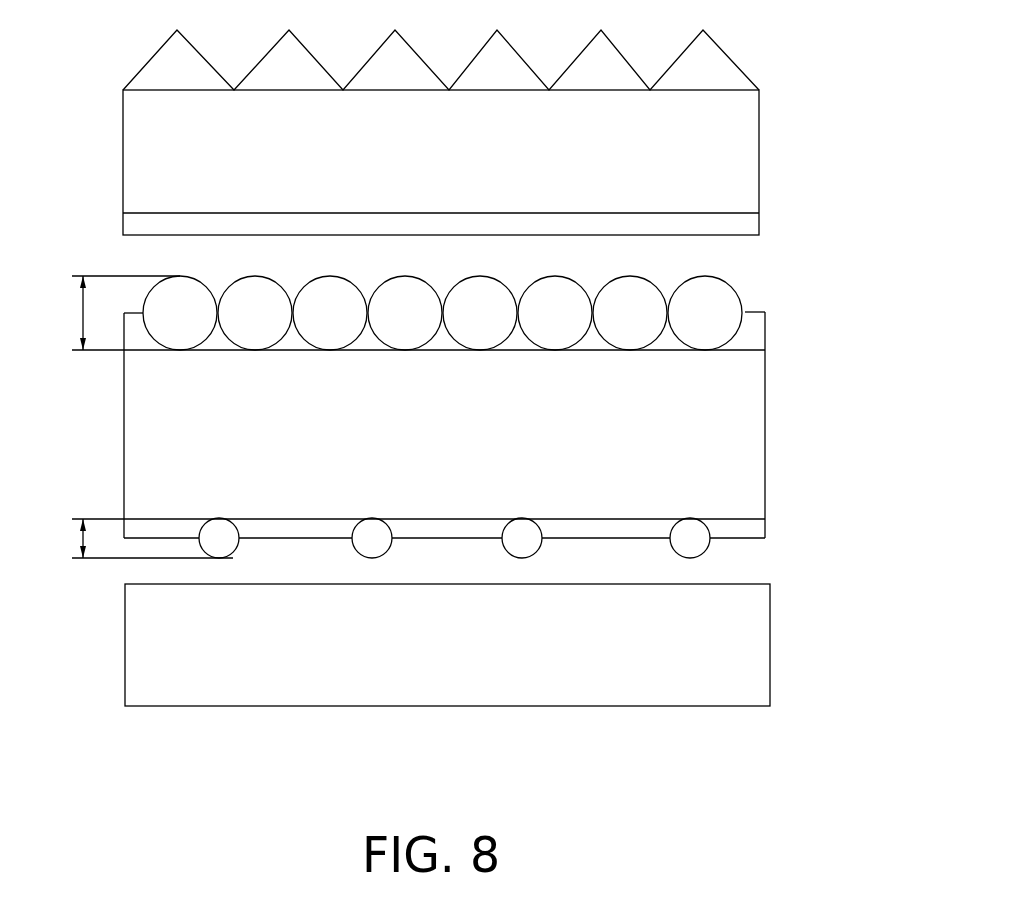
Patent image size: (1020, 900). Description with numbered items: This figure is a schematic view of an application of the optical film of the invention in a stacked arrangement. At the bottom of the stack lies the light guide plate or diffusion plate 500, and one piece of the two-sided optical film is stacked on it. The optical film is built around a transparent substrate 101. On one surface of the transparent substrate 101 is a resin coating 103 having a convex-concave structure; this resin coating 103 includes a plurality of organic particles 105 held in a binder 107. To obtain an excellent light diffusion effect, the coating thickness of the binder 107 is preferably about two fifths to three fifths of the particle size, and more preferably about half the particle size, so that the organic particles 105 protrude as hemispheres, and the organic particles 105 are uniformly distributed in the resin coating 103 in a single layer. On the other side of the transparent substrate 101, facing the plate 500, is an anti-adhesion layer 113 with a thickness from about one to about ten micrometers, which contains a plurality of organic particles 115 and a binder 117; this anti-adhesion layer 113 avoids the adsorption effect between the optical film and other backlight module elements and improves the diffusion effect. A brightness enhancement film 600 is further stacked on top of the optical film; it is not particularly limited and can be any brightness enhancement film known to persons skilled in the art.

The brightness enhancement film 600 is at (735, 150).
The organic particles 105 is at (728, 298).
The binder 107 is at (765, 328).
The resin coating 103 is at (106, 313).
The transparent substrate 101 is at (745, 442).
The binder 117 is at (765, 528).
The organic particles 115 is at (698, 543).
The anti-adhesion layer 113 is at (132, 539).
The light guide plate or diffusion plate 500 is at (750, 650).